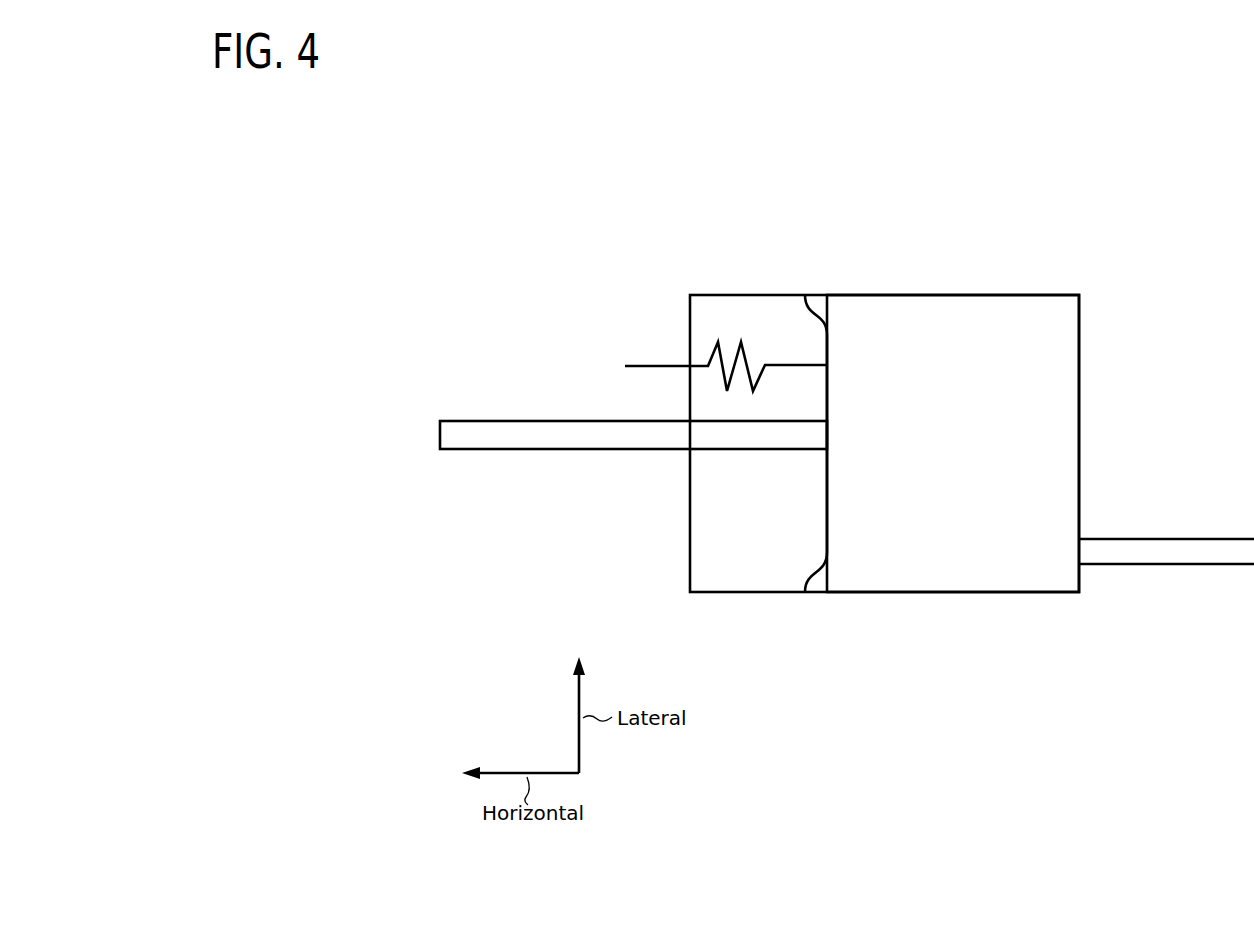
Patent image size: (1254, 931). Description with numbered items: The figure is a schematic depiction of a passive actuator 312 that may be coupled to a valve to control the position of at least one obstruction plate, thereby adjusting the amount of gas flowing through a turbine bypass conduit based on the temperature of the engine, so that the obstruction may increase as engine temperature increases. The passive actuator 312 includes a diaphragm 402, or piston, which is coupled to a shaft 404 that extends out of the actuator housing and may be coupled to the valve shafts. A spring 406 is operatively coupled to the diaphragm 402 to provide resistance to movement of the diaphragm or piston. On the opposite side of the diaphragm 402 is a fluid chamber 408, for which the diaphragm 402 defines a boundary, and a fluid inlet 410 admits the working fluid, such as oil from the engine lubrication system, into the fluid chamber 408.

The passive actuator 312 is at (658, 219).
The diaphragm 402 is at (828, 349).
The shaft 404 is at (487, 436).
The spring 406 is at (748, 357).
The fluid chamber 408 is at (972, 464).
The fluid inlet 410 is at (1138, 551).